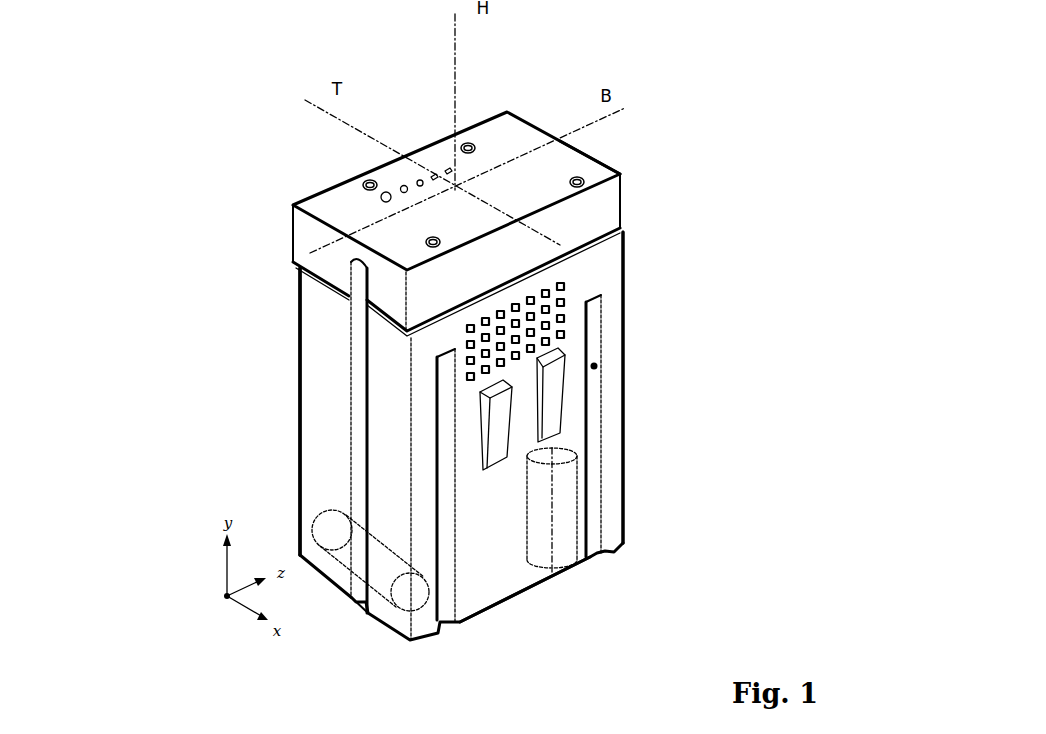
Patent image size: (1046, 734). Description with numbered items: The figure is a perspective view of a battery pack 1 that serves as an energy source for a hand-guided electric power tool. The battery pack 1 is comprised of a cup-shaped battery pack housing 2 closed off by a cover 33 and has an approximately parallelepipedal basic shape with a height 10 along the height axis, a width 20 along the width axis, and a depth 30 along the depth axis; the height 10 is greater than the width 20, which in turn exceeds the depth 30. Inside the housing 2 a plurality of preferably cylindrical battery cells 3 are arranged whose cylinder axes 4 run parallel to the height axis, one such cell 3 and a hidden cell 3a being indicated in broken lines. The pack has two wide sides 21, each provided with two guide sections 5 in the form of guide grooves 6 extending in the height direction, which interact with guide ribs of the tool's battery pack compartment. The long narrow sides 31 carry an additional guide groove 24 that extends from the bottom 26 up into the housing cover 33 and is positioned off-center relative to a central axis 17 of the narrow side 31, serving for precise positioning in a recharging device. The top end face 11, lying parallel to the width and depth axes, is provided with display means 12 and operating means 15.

The battery pack 1 is at (240, 228).
The battery pack housing 2 is at (298, 330).
The battery cells 3 is at (576, 518).
The hidden bore 3a is at (381, 603).
The cylinder axes 4 is at (550, 462).
The guide sections 5 is at (600, 310).
The guide grooves 6 is at (596, 365).
The height 10 is at (632, 543).
The end faces 11 is at (528, 137).
The display means 12 is at (432, 176).
The operating means 15 is at (381, 195).
The central axis 17 is at (353, 600).
The width 20 is at (630, 545).
The wide sides 21 is at (505, 577).
The guide grooves 24 is at (358, 393).
The bottom 26 is at (518, 600).
The depth 30 is at (308, 450).
The long narrow sides 31 is at (627, 260).
The cover 33 is at (612, 165).